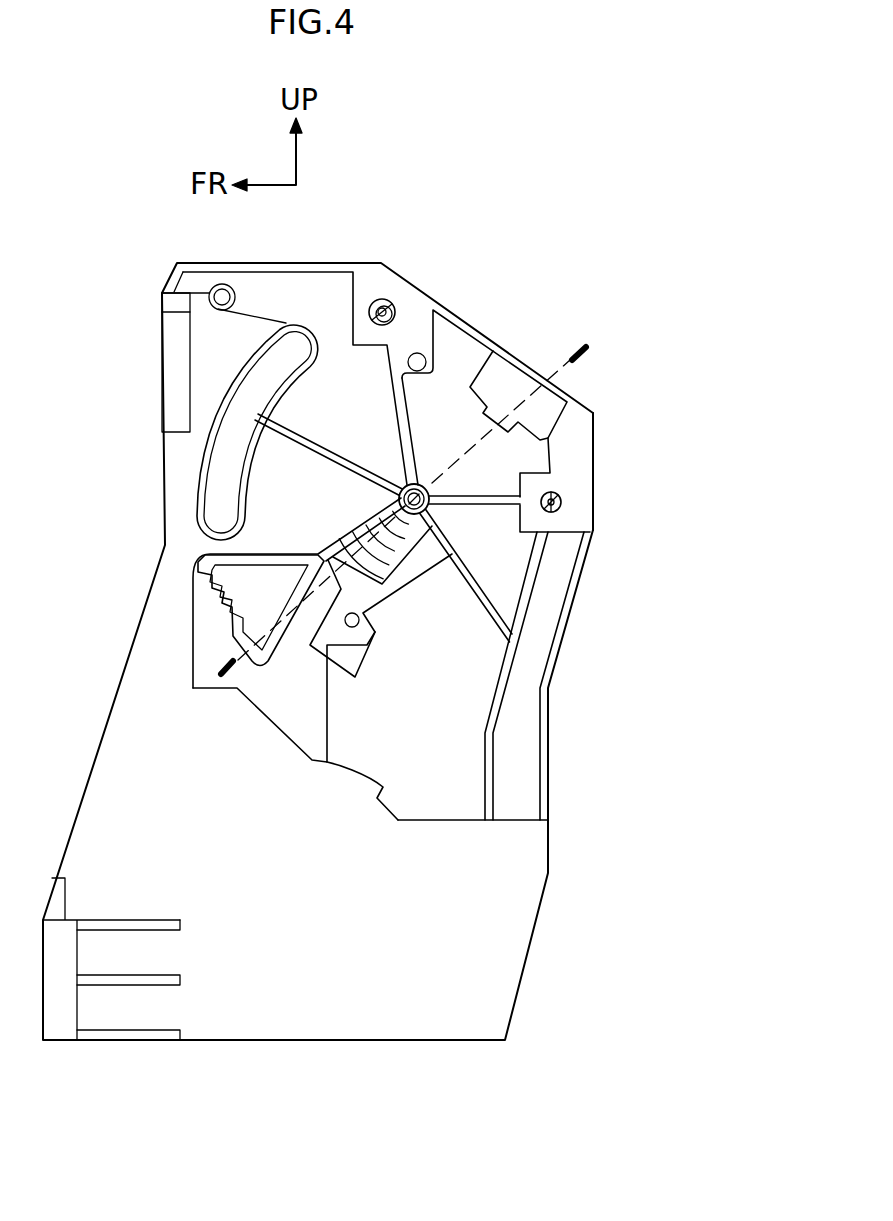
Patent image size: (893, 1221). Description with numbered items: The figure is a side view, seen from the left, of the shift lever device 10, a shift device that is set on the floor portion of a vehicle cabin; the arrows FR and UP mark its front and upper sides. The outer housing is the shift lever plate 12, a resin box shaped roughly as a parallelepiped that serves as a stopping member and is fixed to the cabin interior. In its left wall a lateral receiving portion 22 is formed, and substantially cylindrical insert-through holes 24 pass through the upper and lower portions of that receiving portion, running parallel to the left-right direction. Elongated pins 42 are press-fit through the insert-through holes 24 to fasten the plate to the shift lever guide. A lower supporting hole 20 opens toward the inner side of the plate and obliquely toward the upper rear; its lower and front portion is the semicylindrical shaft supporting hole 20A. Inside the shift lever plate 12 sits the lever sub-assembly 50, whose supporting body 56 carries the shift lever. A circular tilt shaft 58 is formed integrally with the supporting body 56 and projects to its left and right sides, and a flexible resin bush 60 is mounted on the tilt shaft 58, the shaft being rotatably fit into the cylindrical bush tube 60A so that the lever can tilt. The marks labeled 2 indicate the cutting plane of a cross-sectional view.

The section line 2 is at (594, 372).
The shift lever device 10 is at (431, 183).
The shift lever plate 12 is at (126, 655).
The lower supporting hole 20 is at (398, 491).
The shaft supporting hole 20A is at (412, 528).
The lateral receiving portion 22 is at (462, 355).
The insert-through hole 24 is at (396, 317).
The pin 42 is at (380, 302).
The lever sub-assembly 50 is at (186, 610).
The supporting body 56 is at (193, 593).
The tilt shaft 58 is at (368, 507).
The bush 60 is at (396, 605).
The bush tube 60A is at (386, 522).